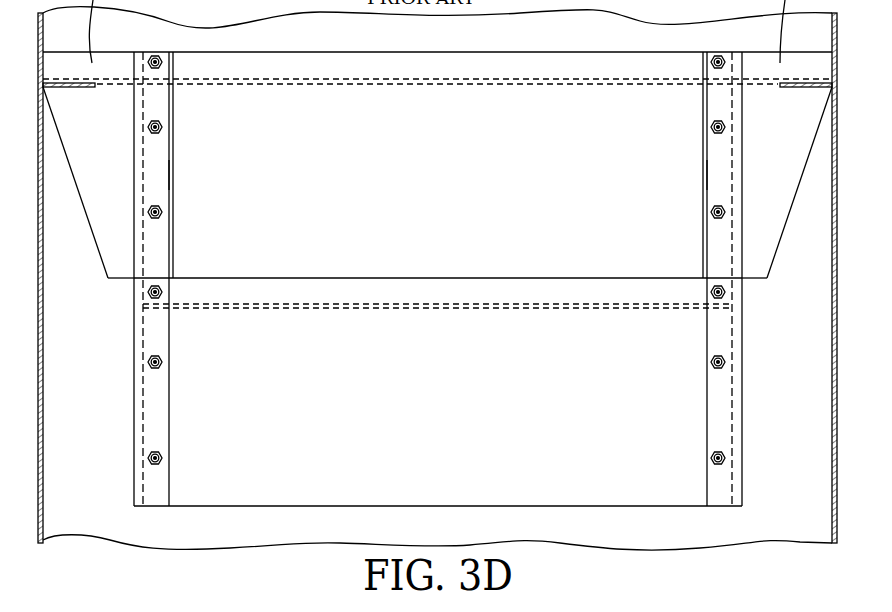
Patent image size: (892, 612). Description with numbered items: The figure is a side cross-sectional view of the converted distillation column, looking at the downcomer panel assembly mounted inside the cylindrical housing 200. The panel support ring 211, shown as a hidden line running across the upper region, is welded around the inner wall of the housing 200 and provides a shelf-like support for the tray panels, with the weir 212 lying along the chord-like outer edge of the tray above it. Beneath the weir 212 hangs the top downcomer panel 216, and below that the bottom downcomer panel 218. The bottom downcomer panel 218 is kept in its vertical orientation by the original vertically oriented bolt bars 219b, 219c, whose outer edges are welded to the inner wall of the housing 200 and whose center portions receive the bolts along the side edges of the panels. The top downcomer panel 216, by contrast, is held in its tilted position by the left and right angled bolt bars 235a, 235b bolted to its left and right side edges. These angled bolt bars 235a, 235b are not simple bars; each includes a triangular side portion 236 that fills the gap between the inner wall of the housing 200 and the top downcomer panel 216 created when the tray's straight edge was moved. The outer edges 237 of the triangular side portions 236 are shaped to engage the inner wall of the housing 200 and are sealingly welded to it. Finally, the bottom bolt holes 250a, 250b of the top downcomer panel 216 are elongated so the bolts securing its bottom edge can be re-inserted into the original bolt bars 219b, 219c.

The cylindrical housing 200 is at (43, 433).
The panel support ring 211 is at (180, 85).
The weir 212 is at (498, 74).
The top downcomer panel 216 is at (440, 195).
The bottom downcomer panel 218 is at (440, 406).
The bolt bar 219b is at (718, 413).
The left vertical stiffener 219c is at (158, 403).
The left angled bolt bar 235a is at (160, 176).
The right angled bolt bar 235b is at (714, 172).
The triangular side portion 236 is at (113, 145).
The outer edge 237 is at (91, 247).
The bottom bolt hole 250a is at (165, 289).
The bottom bolt hole 250b is at (703, 283).